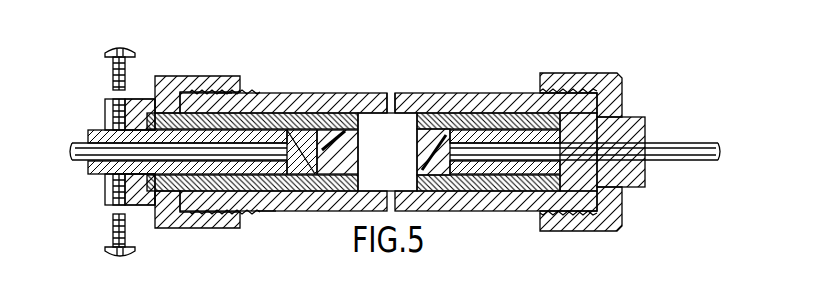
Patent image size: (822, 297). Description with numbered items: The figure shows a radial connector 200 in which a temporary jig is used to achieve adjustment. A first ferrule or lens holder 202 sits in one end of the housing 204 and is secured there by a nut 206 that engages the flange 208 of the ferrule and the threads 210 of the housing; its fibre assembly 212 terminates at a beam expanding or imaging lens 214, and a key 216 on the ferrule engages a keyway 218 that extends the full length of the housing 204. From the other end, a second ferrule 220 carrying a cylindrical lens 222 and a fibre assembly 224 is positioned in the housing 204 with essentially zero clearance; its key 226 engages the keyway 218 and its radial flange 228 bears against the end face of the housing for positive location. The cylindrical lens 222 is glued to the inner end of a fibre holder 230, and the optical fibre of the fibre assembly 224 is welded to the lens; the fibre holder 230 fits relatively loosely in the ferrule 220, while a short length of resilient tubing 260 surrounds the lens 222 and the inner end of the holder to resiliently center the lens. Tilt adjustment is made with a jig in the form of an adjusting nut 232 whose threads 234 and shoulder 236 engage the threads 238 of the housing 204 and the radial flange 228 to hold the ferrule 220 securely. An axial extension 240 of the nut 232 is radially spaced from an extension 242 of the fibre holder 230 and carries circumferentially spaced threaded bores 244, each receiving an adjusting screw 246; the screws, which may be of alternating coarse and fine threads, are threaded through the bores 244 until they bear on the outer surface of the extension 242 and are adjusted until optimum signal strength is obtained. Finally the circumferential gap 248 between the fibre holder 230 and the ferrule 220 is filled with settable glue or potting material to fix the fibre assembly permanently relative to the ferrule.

The radial connector 200 is at (402, 55).
The first ferrule or lens holder 202 is at (466, 101).
The housing 204 is at (498, 118).
The nut 206 is at (600, 73).
The flange 208 is at (618, 108).
The threads 210 is at (536, 90).
The fibre assembly 212 is at (721, 140).
The beam expanding or imaging lens 214 is at (447, 137).
The key 216 is at (434, 193).
The keyway 218 is at (262, 172).
The second ferrule 220 is at (308, 106).
The cylindrical lens 222 is at (327, 130).
The fibre assembly 224 is at (73, 145).
The key 226 is at (348, 191).
The radial flange 228 is at (194, 91).
The fibre holder 230 is at (263, 214).
The adjusting nut 232 is at (197, 74).
The threads 234 is at (208, 230).
The shoulder 236 is at (181, 226).
The threads 238 is at (224, 93).
The axial extension 240 is at (106, 108).
The extension 242 is at (101, 176).
The threaded bores 244 is at (115, 100).
The adjusting screw 246 is at (110, 47).
The circumferential gap 248 is at (276, 212).
The resilient tubing 260 is at (352, 130).